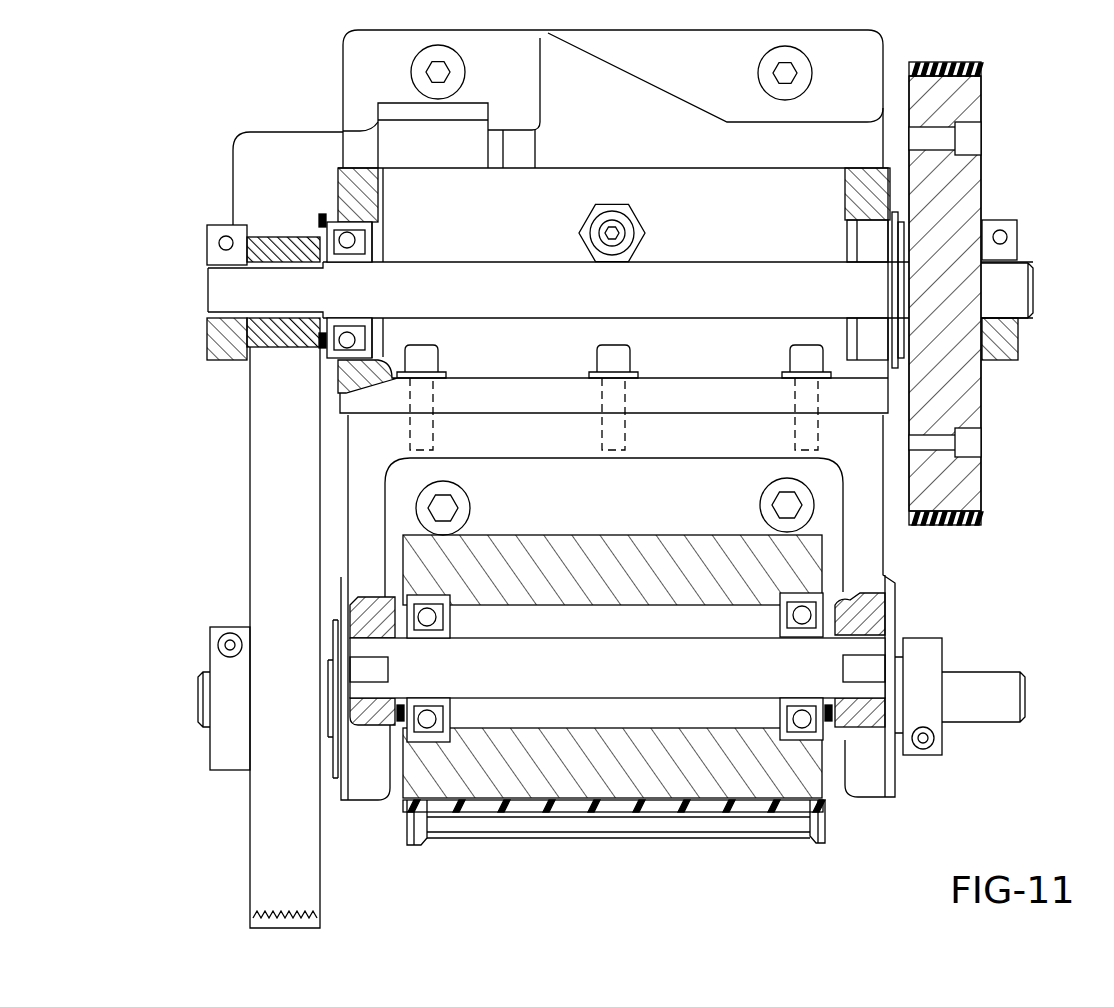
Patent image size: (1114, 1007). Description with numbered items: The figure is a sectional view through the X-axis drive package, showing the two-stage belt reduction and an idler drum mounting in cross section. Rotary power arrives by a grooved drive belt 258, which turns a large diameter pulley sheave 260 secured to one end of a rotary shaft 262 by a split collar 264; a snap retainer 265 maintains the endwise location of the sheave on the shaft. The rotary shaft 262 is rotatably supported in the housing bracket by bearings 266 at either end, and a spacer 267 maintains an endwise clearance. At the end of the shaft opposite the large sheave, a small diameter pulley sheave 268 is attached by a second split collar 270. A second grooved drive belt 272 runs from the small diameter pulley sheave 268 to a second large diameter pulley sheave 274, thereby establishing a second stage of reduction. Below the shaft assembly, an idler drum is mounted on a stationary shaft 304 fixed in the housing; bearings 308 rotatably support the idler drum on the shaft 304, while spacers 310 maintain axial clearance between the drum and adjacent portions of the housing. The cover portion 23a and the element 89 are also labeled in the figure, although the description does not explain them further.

The housing cover 23a is at (283, 131).
The grooved drive belt 258 is at (946, 60).
The large diameter pulley sheave 260 is at (980, 100).
The rotary shaft 262 is at (1016, 270).
The split collar 264 is at (1020, 352).
The snap retainer 265 is at (904, 337).
The bearings 266 is at (325, 218).
The spacer 267 is at (320, 348).
The small diameter pulley sheave 268 is at (265, 263).
The split collar 270 is at (207, 358).
The second grooved drive belt 272 is at (275, 238).
The second large diameter pulley sheave 274 is at (246, 862).
The stationary shaft 304 is at (585, 673).
The bearings 308 is at (452, 632).
The spacers 310 is at (400, 722).
The motor 89 is at (652, 818).